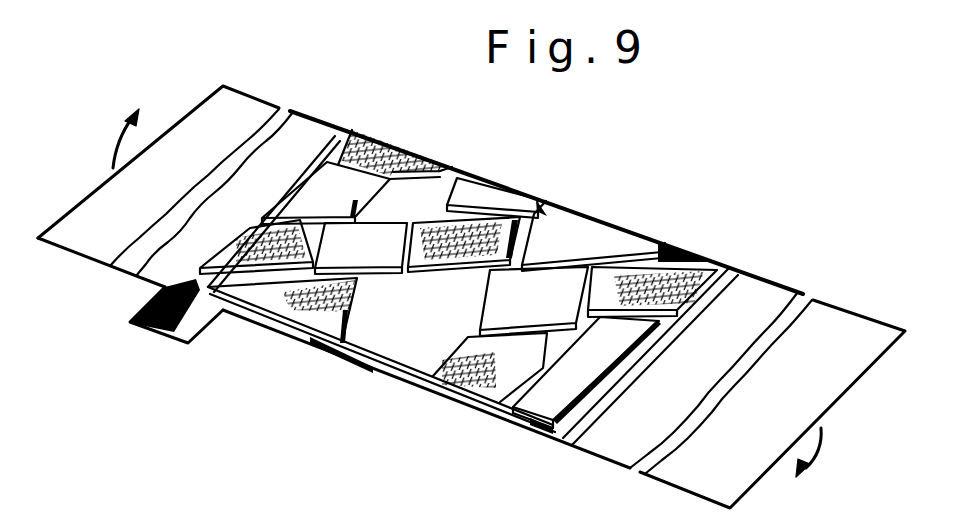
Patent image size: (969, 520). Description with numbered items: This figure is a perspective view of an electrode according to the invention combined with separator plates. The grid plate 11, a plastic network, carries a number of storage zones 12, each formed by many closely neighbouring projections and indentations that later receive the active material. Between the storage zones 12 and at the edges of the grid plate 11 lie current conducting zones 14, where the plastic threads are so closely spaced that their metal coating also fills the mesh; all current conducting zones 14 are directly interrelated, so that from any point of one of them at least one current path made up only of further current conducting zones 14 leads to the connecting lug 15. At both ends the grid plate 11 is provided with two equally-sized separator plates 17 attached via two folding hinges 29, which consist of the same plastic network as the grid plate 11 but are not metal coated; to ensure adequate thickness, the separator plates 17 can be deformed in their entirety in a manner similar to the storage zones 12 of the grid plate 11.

The grid plate 11 is at (600, 223).
The storage zones 12 is at (245, 241).
The current conducting zones 14 is at (687, 248).
The connecting lug 15 is at (168, 345).
The separator plates 17 is at (134, 258).
The folding hinges 29 is at (307, 163).